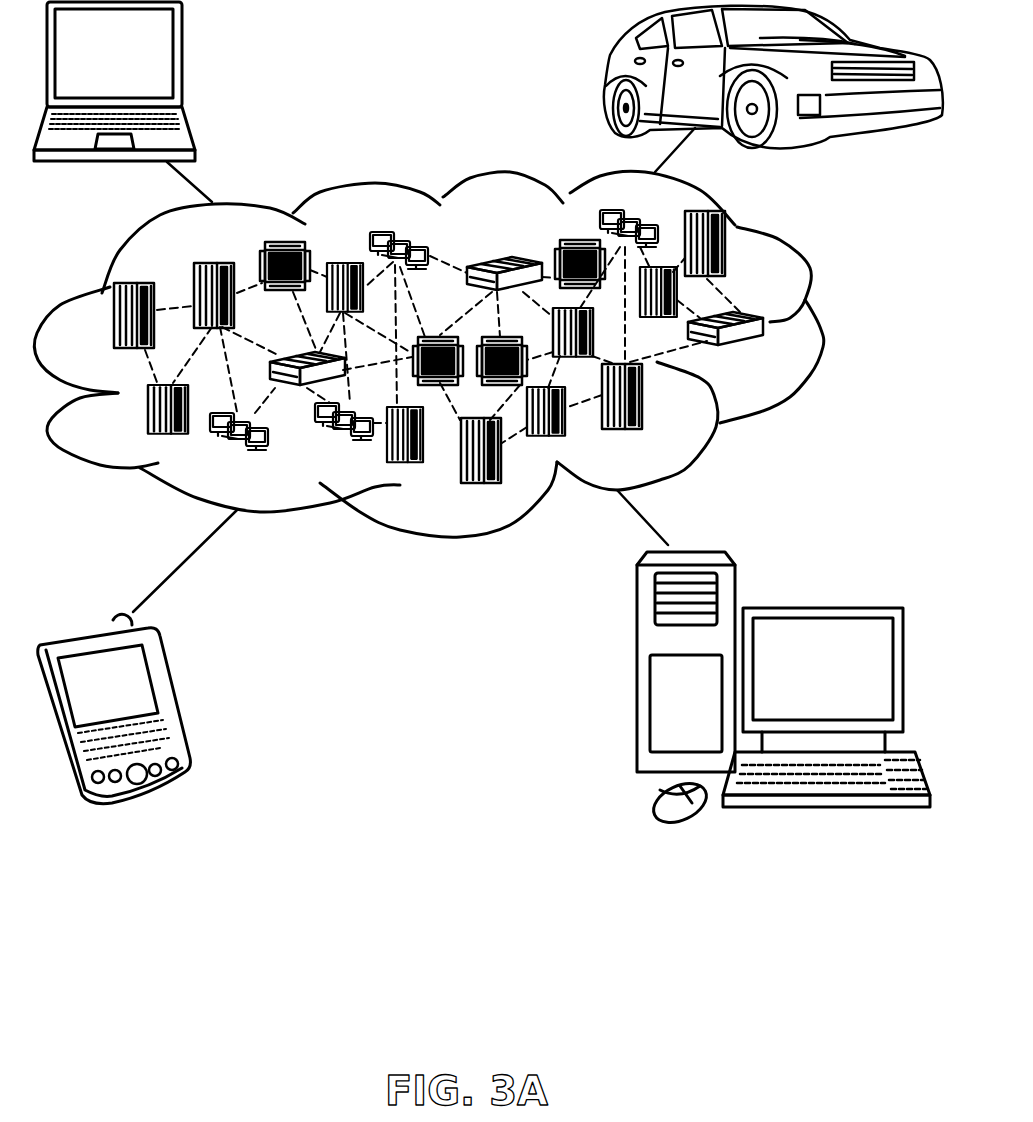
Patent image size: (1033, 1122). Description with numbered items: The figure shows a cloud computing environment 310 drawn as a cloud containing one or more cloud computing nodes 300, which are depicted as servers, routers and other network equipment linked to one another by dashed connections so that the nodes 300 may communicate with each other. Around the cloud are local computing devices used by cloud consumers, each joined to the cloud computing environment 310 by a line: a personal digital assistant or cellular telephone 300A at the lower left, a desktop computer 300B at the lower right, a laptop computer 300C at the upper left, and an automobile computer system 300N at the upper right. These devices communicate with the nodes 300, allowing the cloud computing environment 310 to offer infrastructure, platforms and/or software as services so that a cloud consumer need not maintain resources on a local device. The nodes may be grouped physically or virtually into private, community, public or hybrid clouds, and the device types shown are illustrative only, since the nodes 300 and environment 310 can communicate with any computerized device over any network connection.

The cloud computing nodes 300 is at (767, 357).
The cloud computing environment 310 is at (820, 327).
The personal digital assistant (PDA) or cellular telephone 300A is at (170, 696).
The desktop computer 300B is at (820, 607).
The laptop computer 300C is at (182, 61).
The automobile computer system 300N is at (610, 78).